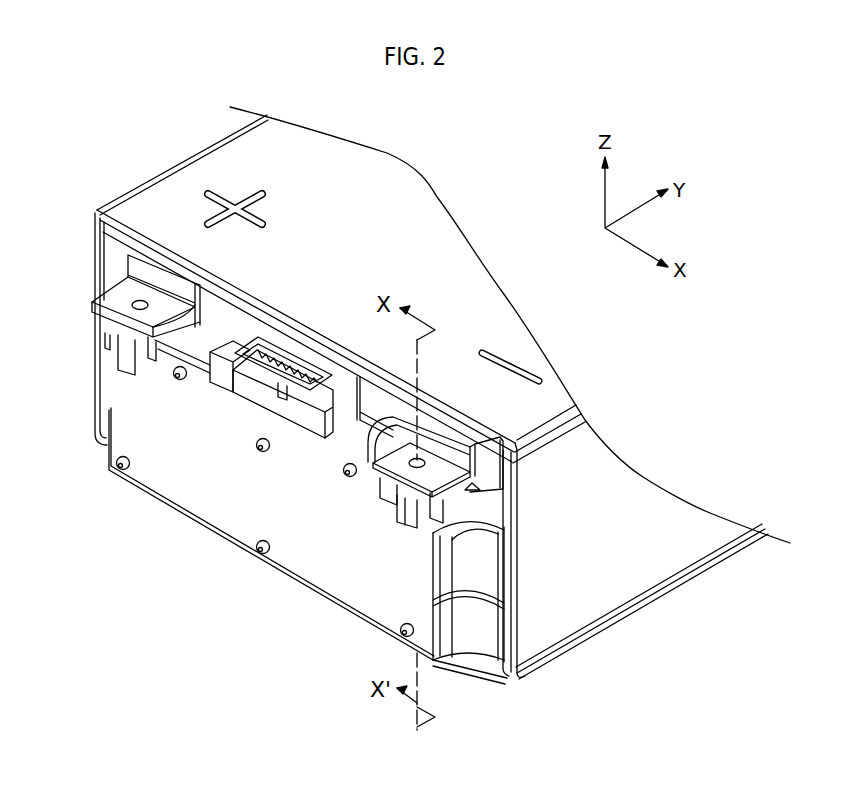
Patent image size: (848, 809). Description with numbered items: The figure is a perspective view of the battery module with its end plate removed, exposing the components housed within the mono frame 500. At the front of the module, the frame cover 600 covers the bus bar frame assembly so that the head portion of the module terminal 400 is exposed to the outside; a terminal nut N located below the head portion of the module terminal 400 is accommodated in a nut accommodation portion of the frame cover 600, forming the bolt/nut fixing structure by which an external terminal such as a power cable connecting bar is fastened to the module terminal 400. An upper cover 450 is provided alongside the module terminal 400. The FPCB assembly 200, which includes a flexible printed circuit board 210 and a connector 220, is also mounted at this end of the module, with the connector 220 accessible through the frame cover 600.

The FPCB assembly 200 is at (373, 248).
The flexible printed circuit board 210 is at (298, 347).
The connector 220 is at (280, 342).
The module terminal 400 is at (437, 467).
The upper cover 450 is at (137, 246).
The mono frame 500 is at (425, 243).
The frame cover 600 is at (373, 600).
The terminal nut N is at (408, 510).